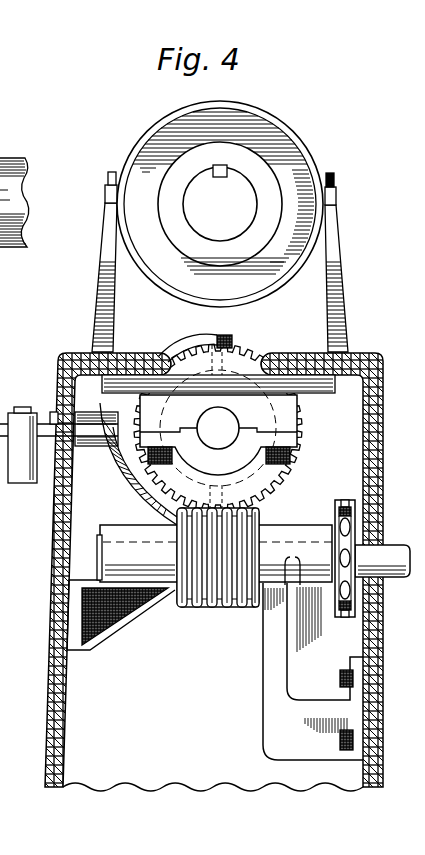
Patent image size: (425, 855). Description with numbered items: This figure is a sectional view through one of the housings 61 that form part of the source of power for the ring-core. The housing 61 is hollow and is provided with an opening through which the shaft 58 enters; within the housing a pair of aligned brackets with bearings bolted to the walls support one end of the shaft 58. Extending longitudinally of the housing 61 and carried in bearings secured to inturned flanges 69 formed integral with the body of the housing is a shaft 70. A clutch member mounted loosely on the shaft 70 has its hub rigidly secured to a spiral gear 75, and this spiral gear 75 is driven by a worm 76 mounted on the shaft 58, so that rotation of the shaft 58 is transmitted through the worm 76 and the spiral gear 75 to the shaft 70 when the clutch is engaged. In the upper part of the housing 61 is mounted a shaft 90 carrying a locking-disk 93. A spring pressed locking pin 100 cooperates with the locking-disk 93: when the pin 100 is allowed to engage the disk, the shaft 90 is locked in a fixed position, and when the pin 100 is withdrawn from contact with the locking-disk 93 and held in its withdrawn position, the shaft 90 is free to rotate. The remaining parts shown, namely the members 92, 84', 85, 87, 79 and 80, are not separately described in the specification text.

The spring pressed locking pin 100 is at (14, 164).
The strut 92 is at (332, 232).
The shaft 90 is at (220, 203).
The locking-disk 93 is at (220, 204).
The guard 84' is at (186, 336).
The plate 85 is at (225, 363).
The inturned flanges 69 is at (298, 362).
The spiral gear 75 is at (300, 434).
The shaft 70 is at (218, 428).
The rod 87 is at (25, 483).
The housing 61 is at (215, 670).
The shaft 58 is at (390, 553).
The worm 76 is at (213, 608).
The ball bearing 79 is at (341, 525).
The bearing retainer 80 is at (332, 503).